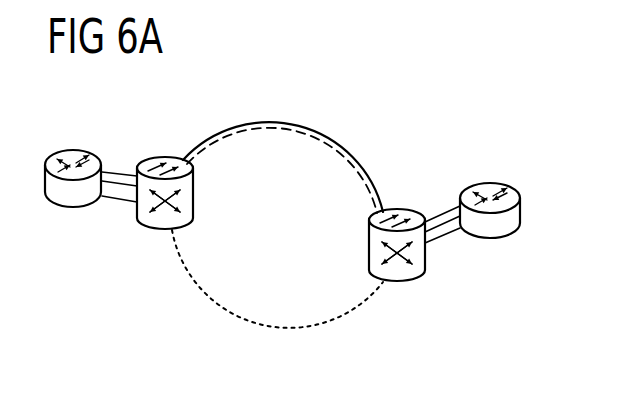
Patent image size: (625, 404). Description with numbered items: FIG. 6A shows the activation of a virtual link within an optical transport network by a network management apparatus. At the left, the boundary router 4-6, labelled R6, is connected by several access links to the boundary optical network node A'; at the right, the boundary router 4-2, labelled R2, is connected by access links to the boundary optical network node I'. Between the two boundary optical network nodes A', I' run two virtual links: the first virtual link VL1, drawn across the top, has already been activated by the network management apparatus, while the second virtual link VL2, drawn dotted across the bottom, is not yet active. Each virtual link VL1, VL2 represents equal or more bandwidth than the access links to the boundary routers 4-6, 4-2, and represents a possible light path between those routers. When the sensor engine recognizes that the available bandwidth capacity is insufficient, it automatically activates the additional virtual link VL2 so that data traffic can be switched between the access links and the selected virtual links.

The boundary router 4-6 is at (76, 150).
The boundary router 4-2 is at (490, 183).
The router R6 label R6 is at (73, 229).
The router R2 label R2 is at (487, 261).
The boundary optical network node A' is at (165, 175).
The boundary optical network node I' is at (397, 225).
The first virtual link VL1 is at (277, 128).
The second virtual link VL2 is at (277, 327).